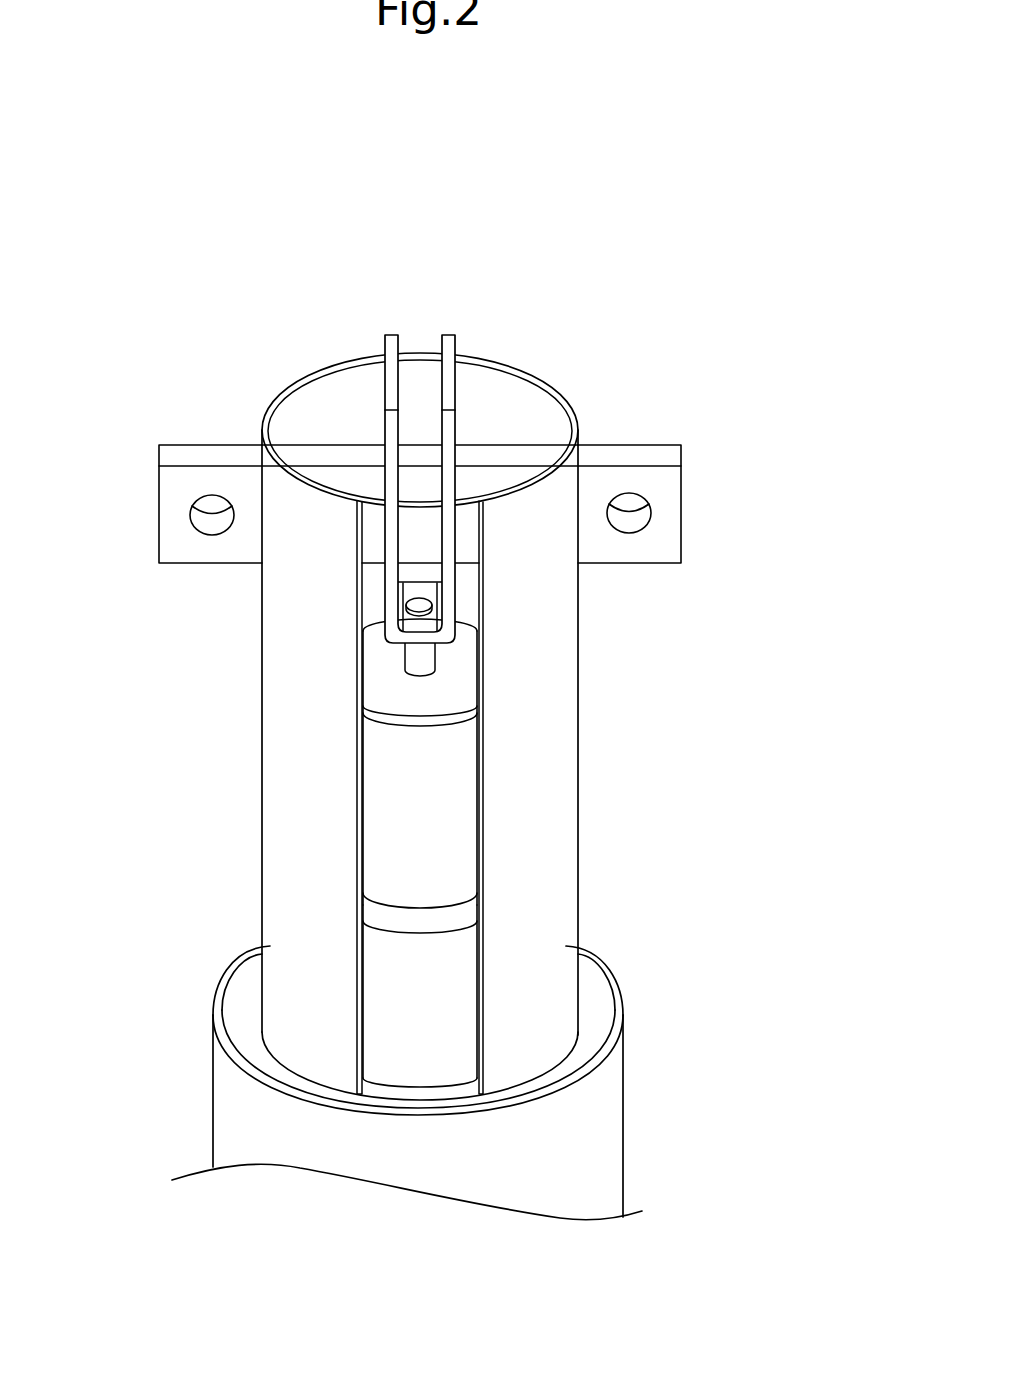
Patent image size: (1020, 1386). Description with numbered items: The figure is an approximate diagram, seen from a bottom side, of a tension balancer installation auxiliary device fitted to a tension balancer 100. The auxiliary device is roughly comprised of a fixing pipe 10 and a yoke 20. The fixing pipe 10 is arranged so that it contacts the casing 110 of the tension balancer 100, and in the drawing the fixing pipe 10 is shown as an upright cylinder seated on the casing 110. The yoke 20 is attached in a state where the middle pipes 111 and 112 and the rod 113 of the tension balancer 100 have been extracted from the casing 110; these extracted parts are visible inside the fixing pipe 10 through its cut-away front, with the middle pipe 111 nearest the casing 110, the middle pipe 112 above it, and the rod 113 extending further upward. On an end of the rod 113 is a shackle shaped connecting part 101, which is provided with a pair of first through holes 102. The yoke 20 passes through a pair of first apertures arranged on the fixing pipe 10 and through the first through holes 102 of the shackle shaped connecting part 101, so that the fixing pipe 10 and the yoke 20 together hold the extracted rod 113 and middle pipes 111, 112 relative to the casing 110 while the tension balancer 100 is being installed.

The tension balancer 100 is at (178, 1124).
The fixing pipe 10 is at (287, 656).
The yoke 20 is at (667, 495).
The shackle shaped connecting part 101 is at (457, 345).
The first through hole 102 is at (457, 502).
The casing 110 is at (573, 1145).
The middle pipe 111 is at (447, 978).
The middle pipe 112 is at (448, 815).
The rod 113 is at (427, 627).